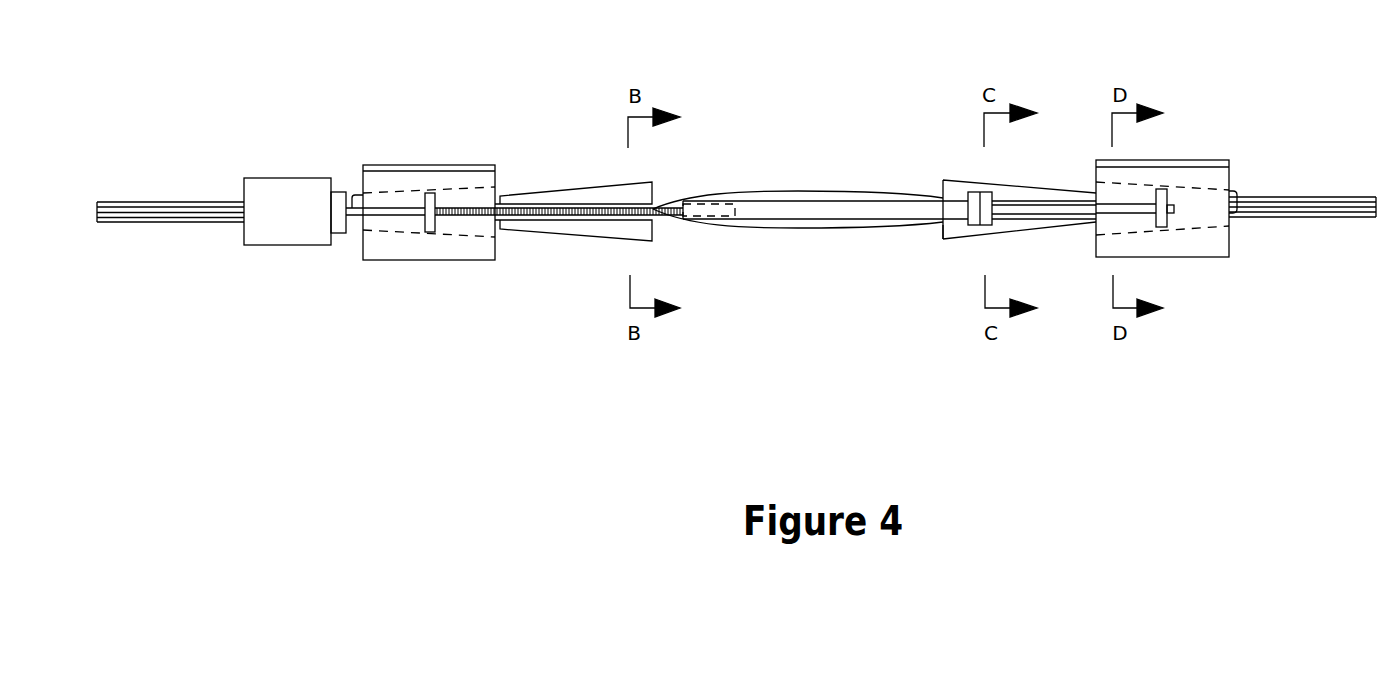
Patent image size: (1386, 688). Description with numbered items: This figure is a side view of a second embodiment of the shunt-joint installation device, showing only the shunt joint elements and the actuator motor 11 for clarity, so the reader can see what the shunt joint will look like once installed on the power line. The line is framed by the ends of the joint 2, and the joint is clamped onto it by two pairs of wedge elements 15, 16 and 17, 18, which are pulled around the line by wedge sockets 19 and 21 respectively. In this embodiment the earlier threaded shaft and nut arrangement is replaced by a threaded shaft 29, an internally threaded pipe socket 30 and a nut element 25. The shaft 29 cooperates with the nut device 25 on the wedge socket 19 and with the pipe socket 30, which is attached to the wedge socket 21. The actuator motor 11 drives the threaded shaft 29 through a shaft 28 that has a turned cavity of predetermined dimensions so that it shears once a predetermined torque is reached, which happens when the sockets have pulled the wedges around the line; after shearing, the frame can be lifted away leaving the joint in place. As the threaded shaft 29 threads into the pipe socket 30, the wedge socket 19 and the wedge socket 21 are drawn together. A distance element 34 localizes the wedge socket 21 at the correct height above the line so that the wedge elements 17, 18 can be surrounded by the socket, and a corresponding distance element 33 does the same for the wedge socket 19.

The joint 2 is at (778, 192).
The actuator motor 11 is at (263, 246).
The wedge element 15 is at (604, 187).
The wedge element 16 is at (578, 235).
The wedge element 17 is at (952, 180).
The wedge element 18 is at (943, 239).
The wedge socket 19 is at (433, 163).
The wedge socket 21 is at (1183, 160).
The nut element 25 is at (437, 224).
The shaft 28 is at (340, 233).
The threaded shaft 29 is at (550, 203).
The internally threaded pipe socket 30 is at (872, 199).
The distance element 33 is at (357, 194).
The distance element 34 is at (1237, 192).